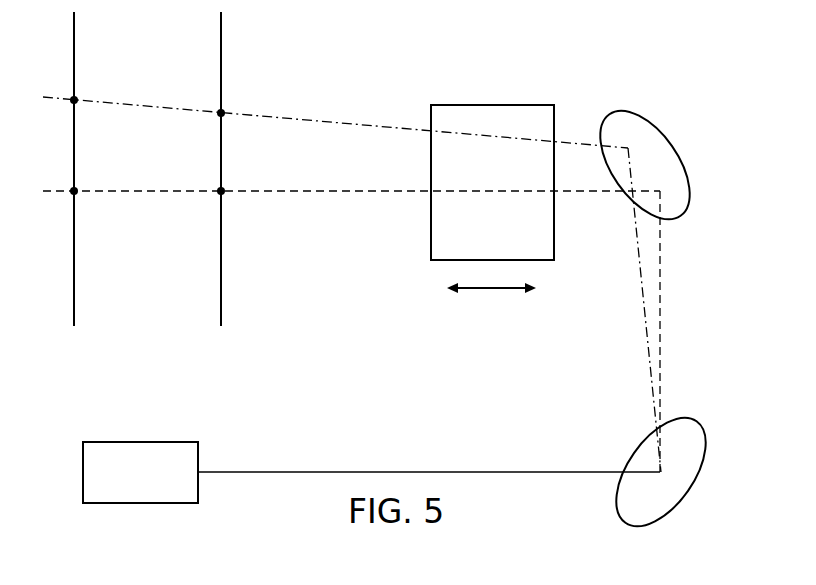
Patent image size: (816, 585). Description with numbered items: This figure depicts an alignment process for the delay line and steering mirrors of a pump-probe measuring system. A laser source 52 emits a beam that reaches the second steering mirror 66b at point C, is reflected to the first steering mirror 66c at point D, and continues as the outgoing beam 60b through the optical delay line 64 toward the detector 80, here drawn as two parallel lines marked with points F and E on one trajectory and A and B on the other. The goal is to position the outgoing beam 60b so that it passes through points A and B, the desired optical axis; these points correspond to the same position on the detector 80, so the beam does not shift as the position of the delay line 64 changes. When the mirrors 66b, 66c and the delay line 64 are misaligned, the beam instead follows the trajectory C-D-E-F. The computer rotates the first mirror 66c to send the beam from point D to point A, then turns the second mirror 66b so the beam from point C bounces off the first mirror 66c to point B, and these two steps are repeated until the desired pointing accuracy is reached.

The detector 80 is at (74, 22).
The outgoing beam 60b is at (338, 122).
The optical delay line 64 is at (571, 102).
The mirror M1 66c is at (656, 164).
The mirror M2 66b is at (660, 475).
The laser source 52 is at (140, 441).